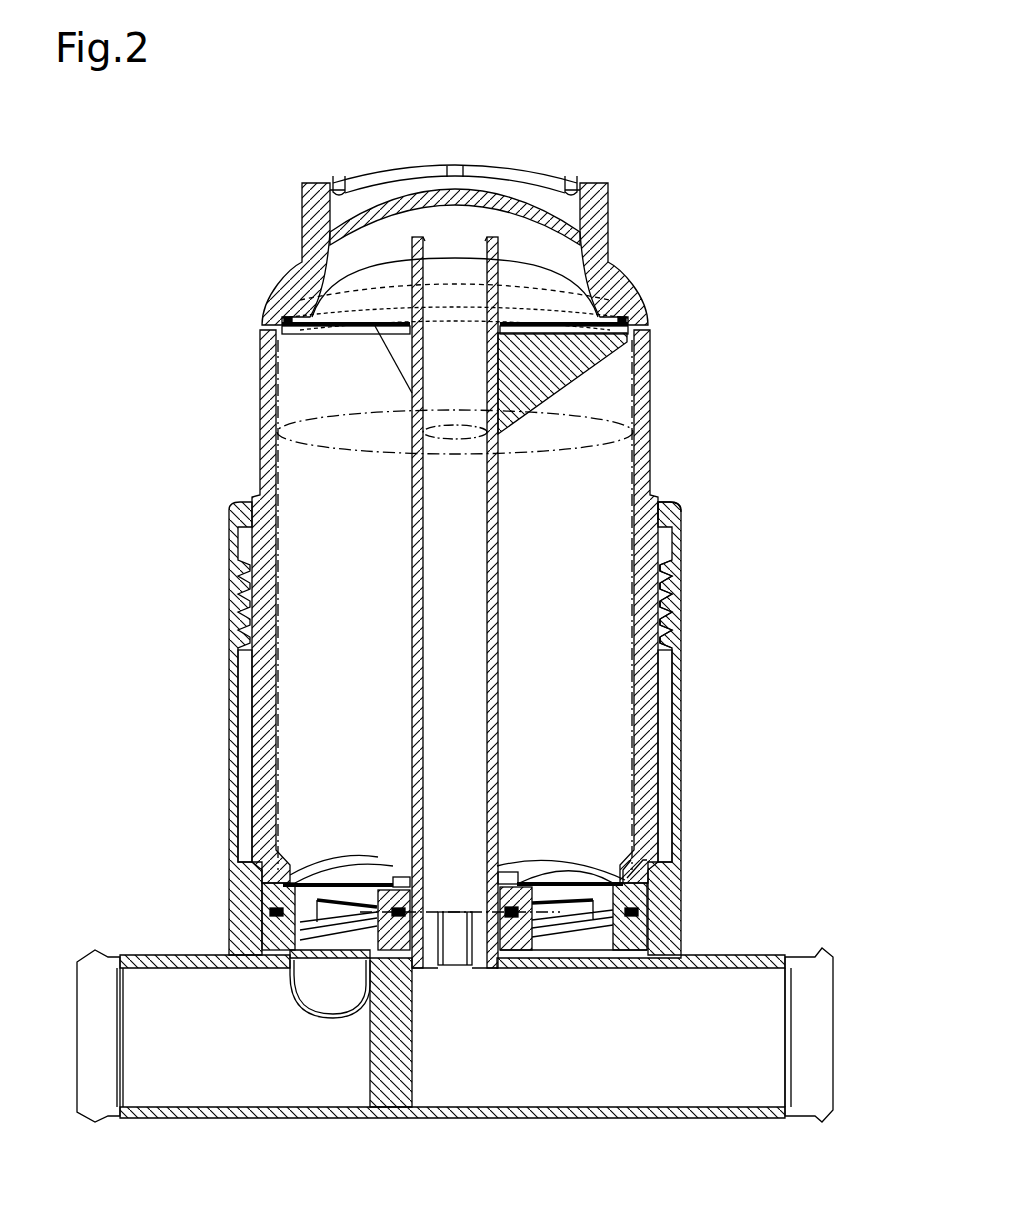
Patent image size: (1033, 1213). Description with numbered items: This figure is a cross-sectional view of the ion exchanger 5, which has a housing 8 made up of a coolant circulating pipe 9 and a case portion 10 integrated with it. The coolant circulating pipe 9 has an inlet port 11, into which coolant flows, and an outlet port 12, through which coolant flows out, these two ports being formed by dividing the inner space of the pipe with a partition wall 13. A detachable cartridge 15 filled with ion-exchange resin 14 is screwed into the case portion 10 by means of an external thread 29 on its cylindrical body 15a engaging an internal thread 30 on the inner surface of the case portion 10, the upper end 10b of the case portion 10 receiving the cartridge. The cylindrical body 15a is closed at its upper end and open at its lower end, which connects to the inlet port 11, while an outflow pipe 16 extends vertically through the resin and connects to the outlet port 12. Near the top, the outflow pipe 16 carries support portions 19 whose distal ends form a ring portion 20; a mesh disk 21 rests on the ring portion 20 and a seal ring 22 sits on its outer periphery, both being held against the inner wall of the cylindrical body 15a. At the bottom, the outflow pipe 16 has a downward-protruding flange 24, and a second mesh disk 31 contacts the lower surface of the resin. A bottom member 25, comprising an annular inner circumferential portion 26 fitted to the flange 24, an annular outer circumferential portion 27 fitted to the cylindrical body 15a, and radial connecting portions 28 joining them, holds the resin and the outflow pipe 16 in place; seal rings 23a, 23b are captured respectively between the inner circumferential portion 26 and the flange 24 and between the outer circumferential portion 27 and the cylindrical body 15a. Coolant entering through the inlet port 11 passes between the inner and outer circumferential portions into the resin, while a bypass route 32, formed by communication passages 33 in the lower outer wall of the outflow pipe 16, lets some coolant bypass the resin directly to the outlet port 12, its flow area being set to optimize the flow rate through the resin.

The ion exchanger 5 is at (690, 165).
The housing 8 is at (455, 814).
The coolant circulating pipe 9 is at (455, 1030).
The case portion 10 is at (229, 750).
The upper end of housing body 10b is at (668, 503).
The inlet port 11 is at (190, 1110).
The outlet port 12 is at (585, 1110).
The partition wall 13 is at (370, 1090).
The ion-exchange resin 14 is at (290, 412).
The cartridge 15 is at (238, 328).
The cylindrical body 15a is at (660, 725).
The outflow pipe 16 is at (497, 683).
The support portions 19 is at (385, 340).
The ring portion 20 is at (295, 338).
The mesh disk 21 is at (540, 300).
The seal ring 22 is at (290, 320).
The seal ring 23a is at (357, 935).
The seal ring 23b is at (640, 950).
The flange 24 is at (405, 900).
The bottom member 25 is at (405, 920).
The inner circumferential portion 26 is at (525, 884).
The outer circumferential portion 27 is at (608, 880).
The connecting portions 28 is at (345, 883).
The external thread 29 is at (670, 572).
The internal thread 30 is at (672, 612).
The mesh disk 31 is at (375, 865).
The bypass route 32 is at (460, 966).
The communication passages 33 is at (435, 965).